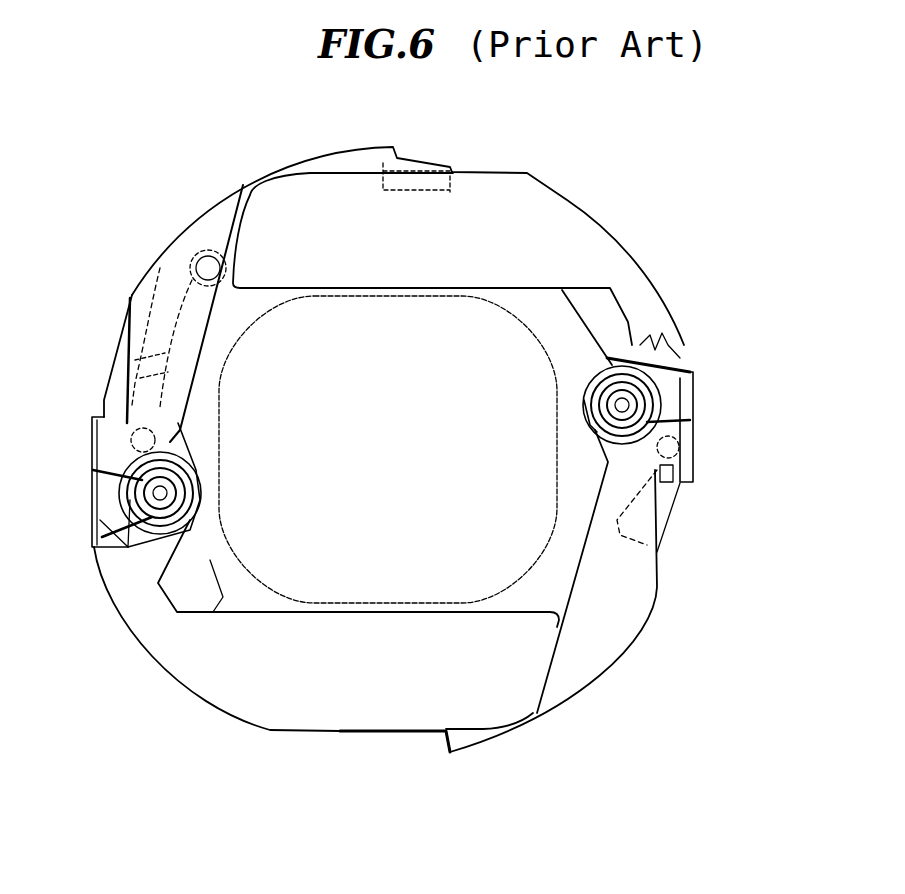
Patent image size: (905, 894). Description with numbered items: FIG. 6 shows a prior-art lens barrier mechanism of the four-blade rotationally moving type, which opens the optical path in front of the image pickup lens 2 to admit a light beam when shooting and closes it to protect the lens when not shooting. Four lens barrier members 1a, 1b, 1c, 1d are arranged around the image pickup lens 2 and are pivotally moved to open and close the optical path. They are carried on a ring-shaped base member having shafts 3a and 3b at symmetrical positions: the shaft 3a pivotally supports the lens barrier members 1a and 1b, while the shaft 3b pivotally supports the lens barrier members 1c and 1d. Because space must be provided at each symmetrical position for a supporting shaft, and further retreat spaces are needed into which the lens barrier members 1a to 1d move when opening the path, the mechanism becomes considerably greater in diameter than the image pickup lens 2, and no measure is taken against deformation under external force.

The lens barrier member 1a is at (553, 237).
The lens barrier member 1b is at (617, 605).
The lens barrier member 1c is at (170, 267).
The lens barrier member 1d is at (223, 668).
The image pickup lens 2 is at (313, 333).
The shaft 3a is at (625, 402).
The shaft 3b is at (158, 492).